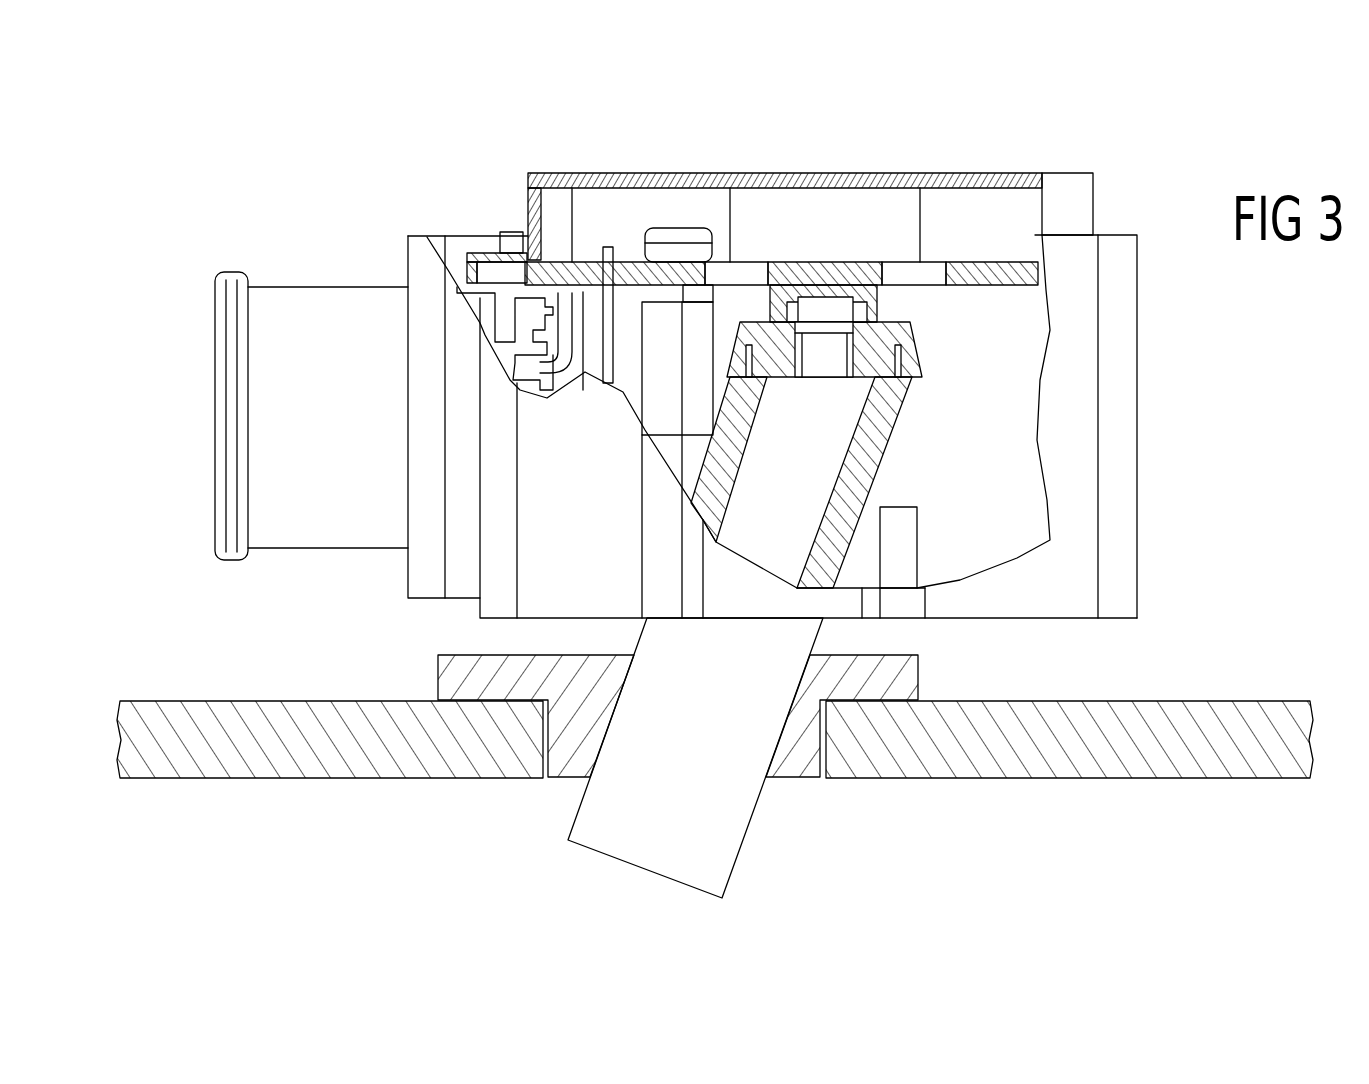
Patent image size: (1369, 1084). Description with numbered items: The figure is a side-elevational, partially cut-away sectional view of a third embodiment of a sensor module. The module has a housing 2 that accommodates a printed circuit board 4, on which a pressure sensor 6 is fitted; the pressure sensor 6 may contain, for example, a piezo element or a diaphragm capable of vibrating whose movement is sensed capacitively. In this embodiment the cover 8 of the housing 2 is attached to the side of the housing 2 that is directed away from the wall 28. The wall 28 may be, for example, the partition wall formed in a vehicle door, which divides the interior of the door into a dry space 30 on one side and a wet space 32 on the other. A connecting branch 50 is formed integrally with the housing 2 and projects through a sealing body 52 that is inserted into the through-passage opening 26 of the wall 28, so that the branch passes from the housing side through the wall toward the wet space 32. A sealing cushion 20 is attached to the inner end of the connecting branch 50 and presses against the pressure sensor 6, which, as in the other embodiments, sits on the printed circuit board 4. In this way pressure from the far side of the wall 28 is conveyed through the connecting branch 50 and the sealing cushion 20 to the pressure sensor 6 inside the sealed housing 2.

The housing 2 is at (315, 300).
The printed circuit board 4 is at (793, 262).
The pressure sensor 6 is at (863, 298).
The cover 8 is at (957, 173).
The sealing cushion 20 is at (912, 343).
The through-passage opening 26 is at (537, 757).
The wall 28 is at (1204, 701).
The dry space 30 is at (1232, 528).
The wet space 32 is at (1156, 841).
The connecting branch 50 is at (637, 853).
The sealing body 52 is at (793, 778).